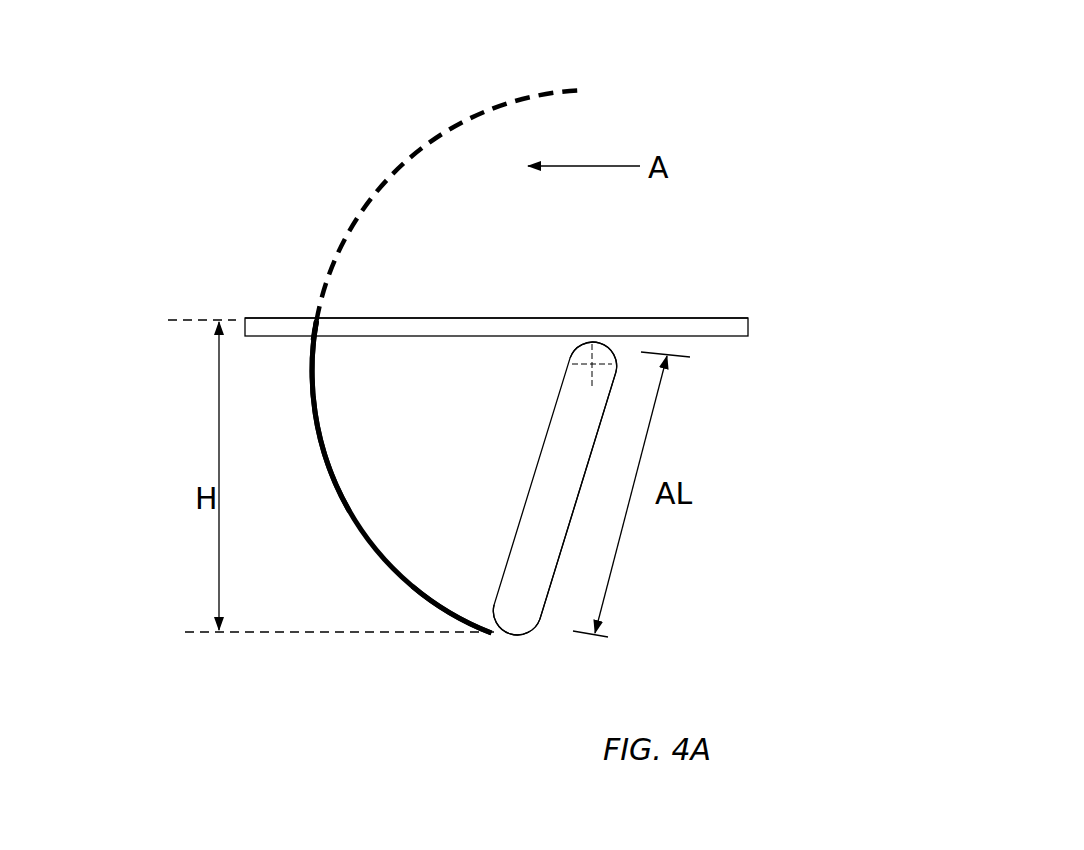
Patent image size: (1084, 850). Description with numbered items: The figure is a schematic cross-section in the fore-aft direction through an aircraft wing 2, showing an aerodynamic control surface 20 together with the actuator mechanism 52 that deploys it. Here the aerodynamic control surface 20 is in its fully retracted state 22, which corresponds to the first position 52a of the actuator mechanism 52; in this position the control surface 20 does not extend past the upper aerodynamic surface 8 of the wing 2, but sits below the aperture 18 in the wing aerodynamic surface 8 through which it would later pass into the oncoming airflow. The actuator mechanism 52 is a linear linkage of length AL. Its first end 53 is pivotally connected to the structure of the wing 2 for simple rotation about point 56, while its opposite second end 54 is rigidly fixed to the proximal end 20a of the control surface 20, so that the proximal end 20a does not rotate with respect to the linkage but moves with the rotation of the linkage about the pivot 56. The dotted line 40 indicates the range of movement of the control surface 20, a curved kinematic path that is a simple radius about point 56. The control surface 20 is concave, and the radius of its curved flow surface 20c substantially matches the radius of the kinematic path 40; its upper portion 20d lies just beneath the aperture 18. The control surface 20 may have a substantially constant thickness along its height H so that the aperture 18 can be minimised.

The aircraft wing 2 is at (705, 330).
The upper aerodynamic surface 8 is at (512, 317).
The aperture 18 is at (310, 317).
The aerodynamic control surface 20 is at (352, 515).
The proximal end 20a is at (490, 633).
The curved flow surface 20c is at (340, 483).
The upper portion of arm 20d is at (317, 447).
The retracted state 22 is at (410, 672).
The curved kinematic path 40 is at (377, 187).
The actuator mechanism 52 is at (532, 566).
The first position 52a is at (652, 577).
The first end 53 is at (580, 357).
The second end 54 is at (510, 633).
The pivot point 56 is at (580, 373).